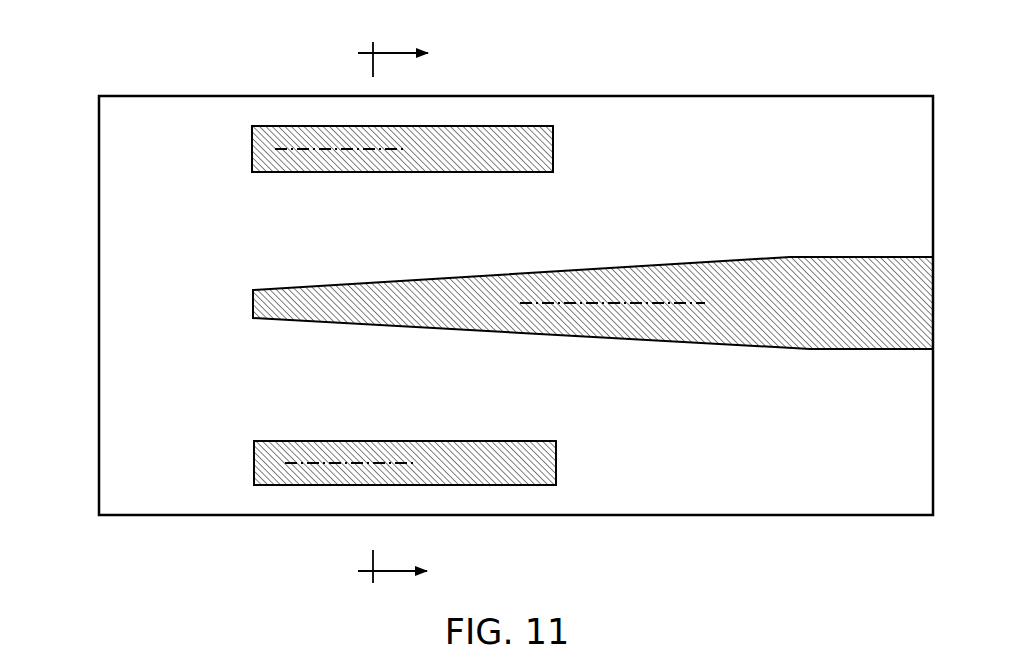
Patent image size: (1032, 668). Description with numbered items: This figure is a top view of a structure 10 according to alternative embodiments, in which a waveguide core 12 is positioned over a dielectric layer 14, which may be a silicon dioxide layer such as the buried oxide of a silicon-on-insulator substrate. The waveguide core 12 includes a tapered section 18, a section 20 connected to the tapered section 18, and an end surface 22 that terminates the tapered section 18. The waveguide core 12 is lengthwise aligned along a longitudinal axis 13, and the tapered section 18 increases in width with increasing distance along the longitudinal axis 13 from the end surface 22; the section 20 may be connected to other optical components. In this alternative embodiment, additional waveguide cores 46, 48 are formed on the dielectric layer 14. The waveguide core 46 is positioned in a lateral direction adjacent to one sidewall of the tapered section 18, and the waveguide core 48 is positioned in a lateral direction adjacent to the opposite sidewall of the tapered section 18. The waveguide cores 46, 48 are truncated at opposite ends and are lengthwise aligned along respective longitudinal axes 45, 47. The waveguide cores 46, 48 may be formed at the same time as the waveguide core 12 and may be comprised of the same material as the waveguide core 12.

The structure 10 is at (141, 58).
The waveguide core 12 is at (524, 243).
The longitudinal axis 13 is at (643, 303).
The dielectric layer 14 is at (153, 435).
The tapered section 18 is at (483, 308).
The section 20 is at (868, 324).
The end surface 22 is at (253, 295).
The longitudinal axis 45 is at (343, 150).
The waveguide core 46 is at (522, 152).
The longitudinal axis 47 is at (348, 463).
The waveguide core 48 is at (528, 463).